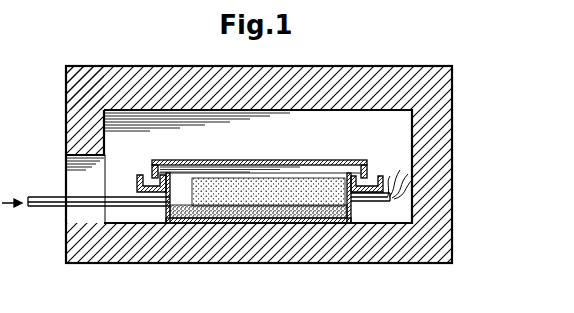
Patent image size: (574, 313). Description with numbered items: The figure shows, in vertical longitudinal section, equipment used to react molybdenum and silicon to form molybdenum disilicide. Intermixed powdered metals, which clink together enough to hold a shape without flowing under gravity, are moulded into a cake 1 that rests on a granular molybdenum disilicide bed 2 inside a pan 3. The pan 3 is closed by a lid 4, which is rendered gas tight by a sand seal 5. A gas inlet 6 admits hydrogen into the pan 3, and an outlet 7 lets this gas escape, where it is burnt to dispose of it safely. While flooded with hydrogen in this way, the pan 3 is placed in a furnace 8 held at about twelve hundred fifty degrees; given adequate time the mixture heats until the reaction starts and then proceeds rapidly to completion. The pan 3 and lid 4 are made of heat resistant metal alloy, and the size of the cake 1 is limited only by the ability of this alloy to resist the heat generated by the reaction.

The cake 1 is at (306, 182).
The granular molybdenum disilicide bed 2 is at (208, 218).
The pan 3 is at (350, 223).
The lid 4 is at (266, 160).
The sand seal 5 is at (148, 176).
The gas inlet 6 is at (52, 200).
The outlet 7 is at (372, 201).
The furnace 8 is at (454, 178).